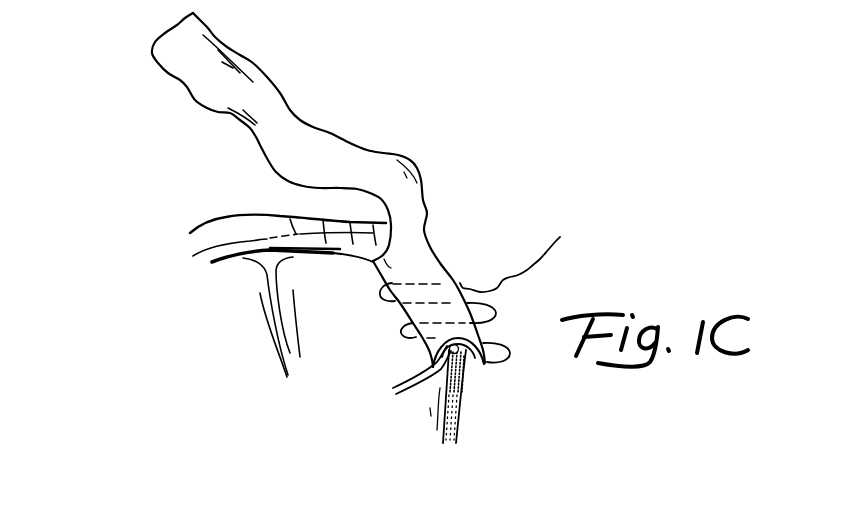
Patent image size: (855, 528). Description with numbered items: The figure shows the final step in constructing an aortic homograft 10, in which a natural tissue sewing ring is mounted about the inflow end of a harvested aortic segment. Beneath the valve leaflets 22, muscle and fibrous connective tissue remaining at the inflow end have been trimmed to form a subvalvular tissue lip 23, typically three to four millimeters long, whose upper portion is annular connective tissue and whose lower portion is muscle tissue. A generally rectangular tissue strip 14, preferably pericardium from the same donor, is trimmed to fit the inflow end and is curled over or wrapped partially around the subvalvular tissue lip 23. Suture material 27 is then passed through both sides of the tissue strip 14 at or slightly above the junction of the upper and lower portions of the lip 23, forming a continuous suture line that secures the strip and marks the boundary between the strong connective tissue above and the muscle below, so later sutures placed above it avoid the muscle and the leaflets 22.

The aortic homograft 10 is at (532, 308).
The tissue strip 14 is at (315, 143).
The leaflets 22 is at (248, 332).
The subvalvular tissue lip 23 is at (222, 261).
The suture material 27 is at (537, 257).